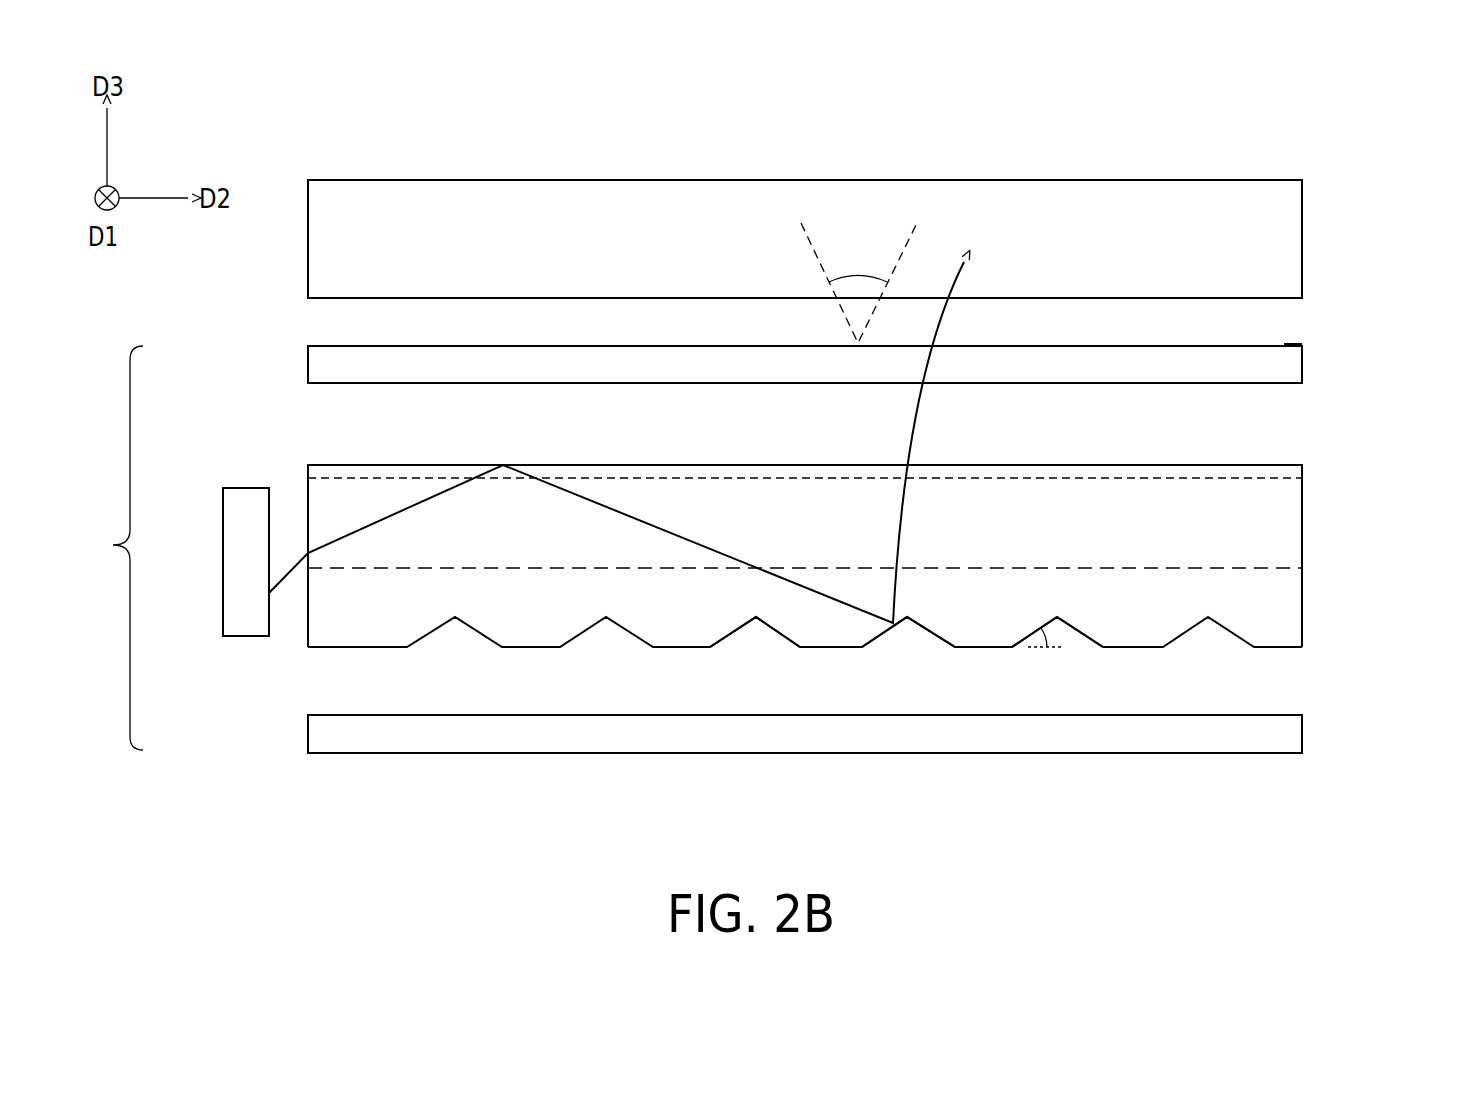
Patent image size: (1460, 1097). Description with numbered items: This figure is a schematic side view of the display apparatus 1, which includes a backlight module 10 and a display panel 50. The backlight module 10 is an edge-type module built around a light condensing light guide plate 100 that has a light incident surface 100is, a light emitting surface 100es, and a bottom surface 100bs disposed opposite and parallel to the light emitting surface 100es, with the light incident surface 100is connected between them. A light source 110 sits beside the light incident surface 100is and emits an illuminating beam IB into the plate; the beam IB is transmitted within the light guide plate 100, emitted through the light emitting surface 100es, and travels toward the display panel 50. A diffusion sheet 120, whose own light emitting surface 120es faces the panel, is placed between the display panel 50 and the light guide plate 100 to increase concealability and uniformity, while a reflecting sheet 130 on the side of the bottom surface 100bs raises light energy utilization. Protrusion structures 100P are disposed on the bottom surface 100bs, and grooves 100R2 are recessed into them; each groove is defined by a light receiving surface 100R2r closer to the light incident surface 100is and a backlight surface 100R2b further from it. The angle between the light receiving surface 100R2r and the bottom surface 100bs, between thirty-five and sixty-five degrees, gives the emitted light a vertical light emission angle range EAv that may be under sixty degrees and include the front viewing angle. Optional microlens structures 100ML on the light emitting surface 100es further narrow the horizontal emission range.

The display apparatus 1 is at (1346, 838).
The backlight module 10 is at (108, 548).
The display panel 50 is at (1287, 232).
The light condensing light guide plate 100 is at (800, 548).
The light emitting surface 100es is at (394, 473).
The light incident surface 100is is at (303, 491).
The bottom surface 100bs is at (378, 572).
The microlens structures 100ML is at (632, 470).
The protrusion structures 100P is at (1278, 625).
The grooves 100R2 is at (888, 634).
The light receiving surface 100R2r is at (1017, 635).
The backlight surface 100R2b is at (1086, 628).
The light source 110 is at (240, 585).
The diffusion sheet 120 is at (1287, 363).
The light emitting surface of the diffusion sheet 120es is at (1286, 342).
The reflecting sheet 130 is at (1285, 737).
The illuminating beam IB is at (698, 545).
The vertical light emission angle range EAv is at (858, 275).